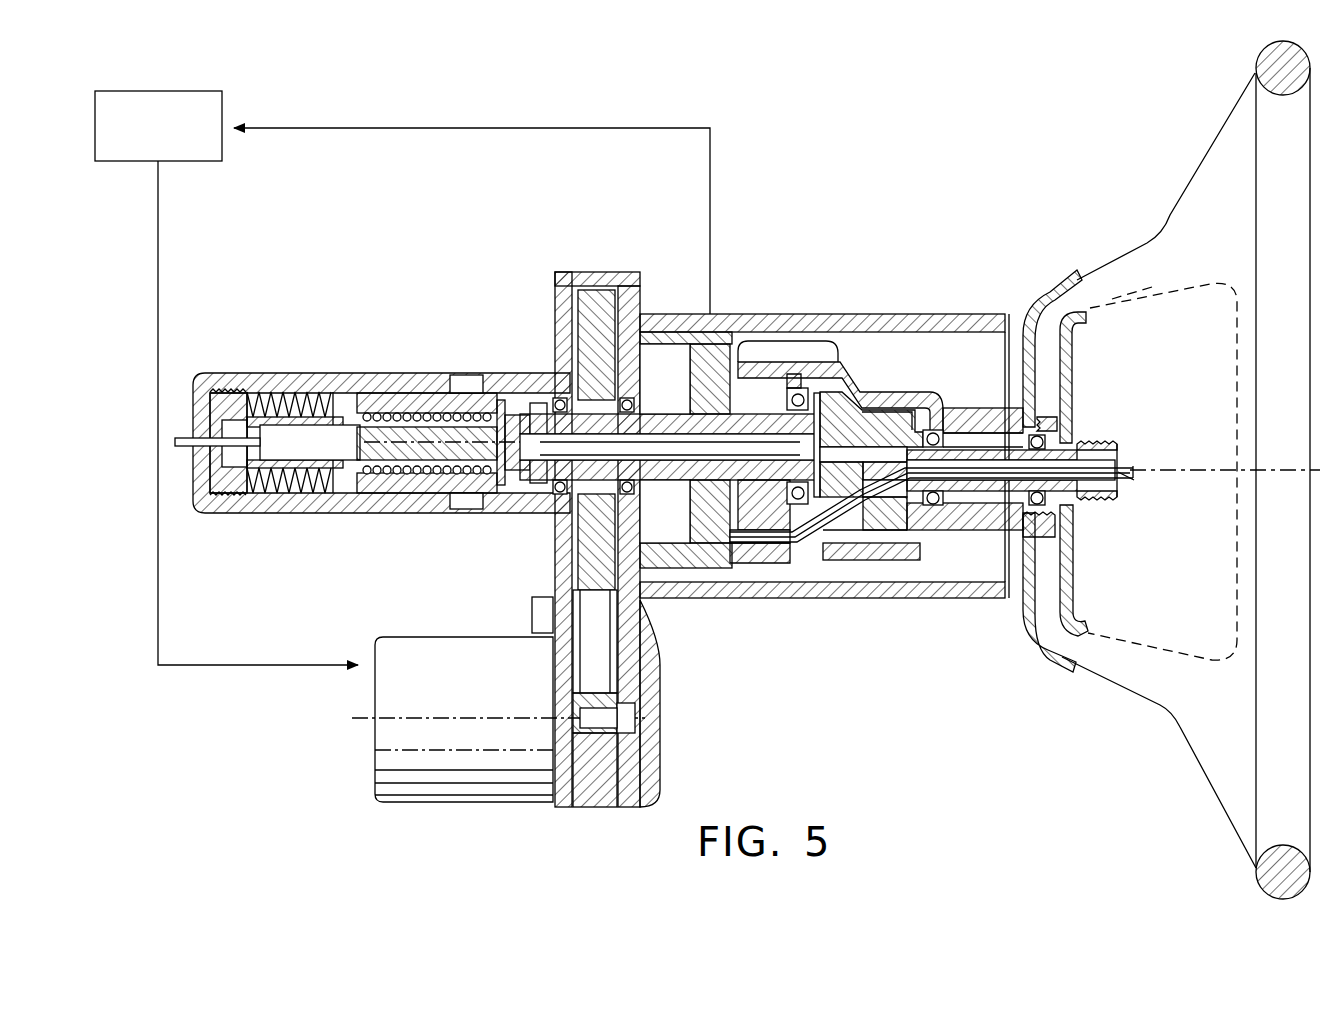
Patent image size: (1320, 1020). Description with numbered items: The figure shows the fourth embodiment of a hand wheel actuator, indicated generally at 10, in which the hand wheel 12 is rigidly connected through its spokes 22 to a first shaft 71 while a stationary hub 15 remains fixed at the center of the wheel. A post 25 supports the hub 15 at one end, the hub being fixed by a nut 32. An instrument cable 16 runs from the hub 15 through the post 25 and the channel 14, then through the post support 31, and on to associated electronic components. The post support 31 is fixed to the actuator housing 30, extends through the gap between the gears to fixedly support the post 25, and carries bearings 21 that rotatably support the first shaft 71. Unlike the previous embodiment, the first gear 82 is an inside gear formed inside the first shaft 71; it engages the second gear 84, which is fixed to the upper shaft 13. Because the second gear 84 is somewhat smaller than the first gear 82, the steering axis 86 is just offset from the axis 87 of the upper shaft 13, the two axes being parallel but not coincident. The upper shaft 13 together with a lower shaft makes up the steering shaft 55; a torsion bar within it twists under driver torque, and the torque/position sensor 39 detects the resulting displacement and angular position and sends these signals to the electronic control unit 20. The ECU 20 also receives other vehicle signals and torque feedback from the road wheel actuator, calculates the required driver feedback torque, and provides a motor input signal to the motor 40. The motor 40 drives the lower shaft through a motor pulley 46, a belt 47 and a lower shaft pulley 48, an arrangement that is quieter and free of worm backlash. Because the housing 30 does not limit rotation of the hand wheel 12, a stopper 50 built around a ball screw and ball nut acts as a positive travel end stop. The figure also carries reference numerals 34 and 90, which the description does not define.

The steering apparatus 10 is at (257, 757).
The hand wheel 12 is at (1255, 160).
The upper shaft 13 is at (813, 408).
The channel 14 is at (822, 540).
The stationary hub 15 is at (1152, 287).
The instrument cable 16 is at (814, 528).
The electronic control unit (ECU) 20 is at (192, 88).
The bearings 21 is at (947, 433).
The spokes 22 is at (1032, 625).
The post 25 is at (993, 492).
The actuator housing 30 is at (787, 598).
The post support 31 is at (893, 531).
The nut 32 is at (1095, 498).
The nut 34 is at (1053, 532).
The torque/position sensor 39 is at (697, 363).
The motor 40 is at (373, 770).
The motor pulley 46 is at (610, 737).
The belt 47 is at (603, 657).
The lower shaft pulley 48 is at (582, 312).
The stopper 50 is at (447, 340).
The steering shaft 55 is at (662, 404).
The first shaft 71 is at (980, 408).
The first gear 82 is at (796, 374).
The second gear 84 is at (733, 393).
The steering axis 86 is at (1183, 462).
The axis of upper shaft 87 is at (178, 446).
The actuator 90 is at (299, 342).